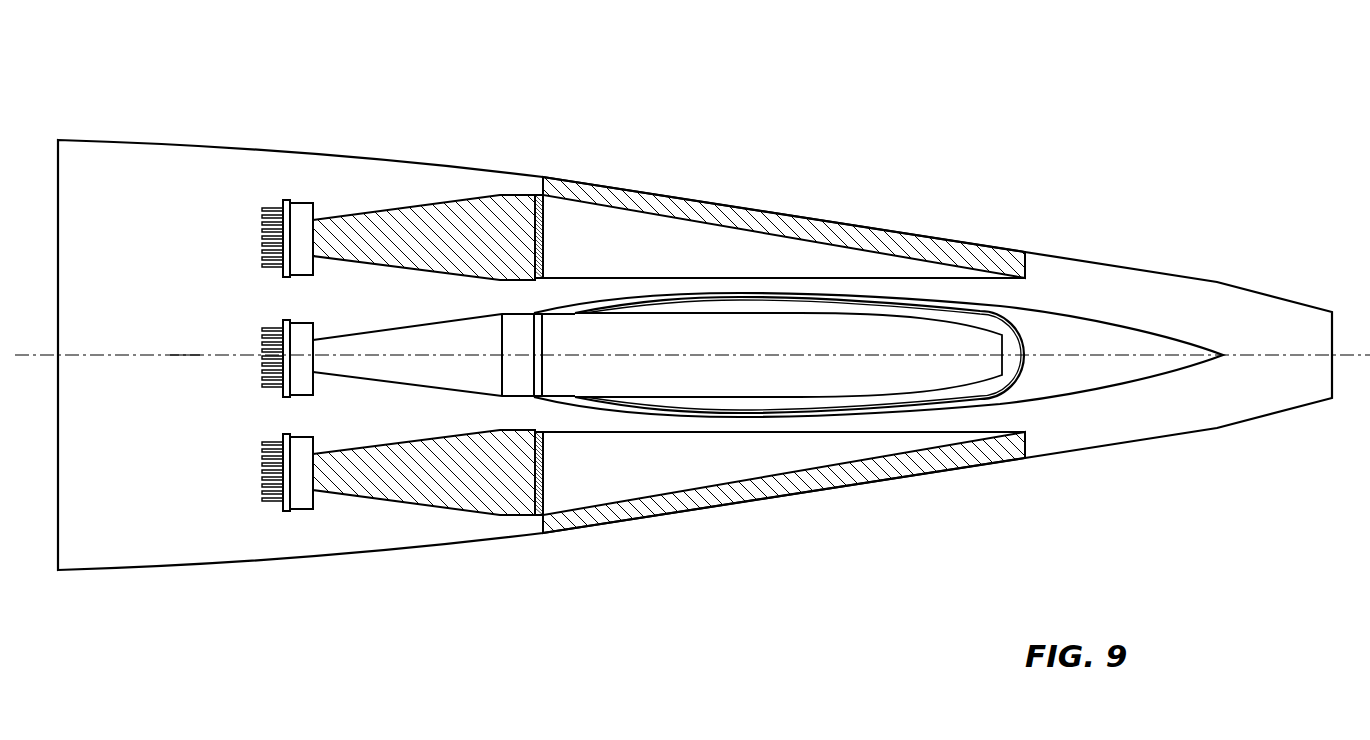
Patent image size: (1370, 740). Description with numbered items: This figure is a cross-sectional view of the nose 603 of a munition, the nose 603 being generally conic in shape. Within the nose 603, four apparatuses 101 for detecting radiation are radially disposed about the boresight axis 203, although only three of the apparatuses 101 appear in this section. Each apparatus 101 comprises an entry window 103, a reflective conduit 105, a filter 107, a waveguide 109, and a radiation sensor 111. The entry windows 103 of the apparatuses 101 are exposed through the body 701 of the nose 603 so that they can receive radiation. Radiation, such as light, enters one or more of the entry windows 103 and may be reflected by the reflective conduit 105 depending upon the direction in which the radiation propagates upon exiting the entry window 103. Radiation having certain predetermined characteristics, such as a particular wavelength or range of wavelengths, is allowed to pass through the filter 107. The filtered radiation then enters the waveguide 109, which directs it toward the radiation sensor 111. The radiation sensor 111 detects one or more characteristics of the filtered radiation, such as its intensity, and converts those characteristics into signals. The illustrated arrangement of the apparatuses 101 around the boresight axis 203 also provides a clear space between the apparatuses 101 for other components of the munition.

The apparatus for detecting radiation 101 is at (962, 228).
The entry window 103 is at (632, 190).
The reflective conduit 105 is at (567, 279).
The filter 107 is at (541, 195).
The waveguide 109 is at (428, 218).
The radiation sensor 111 is at (284, 209).
The boresight axis 203 is at (190, 352).
The nose 603 is at (851, 114).
The body 701 is at (332, 150).